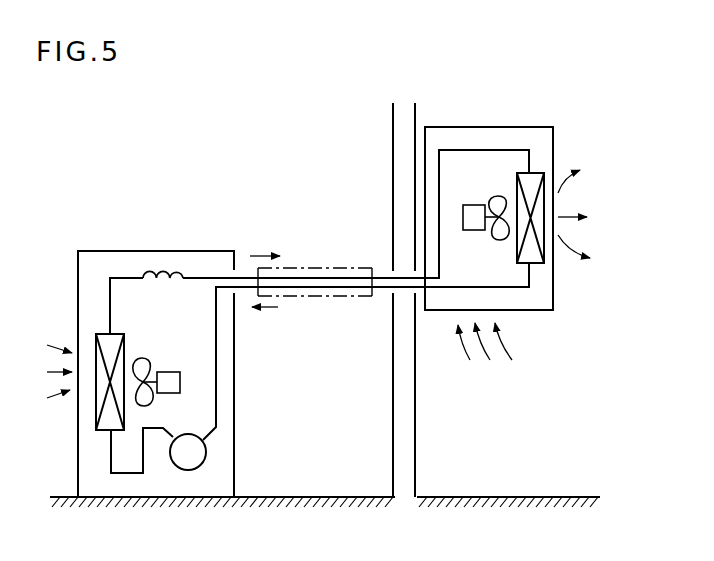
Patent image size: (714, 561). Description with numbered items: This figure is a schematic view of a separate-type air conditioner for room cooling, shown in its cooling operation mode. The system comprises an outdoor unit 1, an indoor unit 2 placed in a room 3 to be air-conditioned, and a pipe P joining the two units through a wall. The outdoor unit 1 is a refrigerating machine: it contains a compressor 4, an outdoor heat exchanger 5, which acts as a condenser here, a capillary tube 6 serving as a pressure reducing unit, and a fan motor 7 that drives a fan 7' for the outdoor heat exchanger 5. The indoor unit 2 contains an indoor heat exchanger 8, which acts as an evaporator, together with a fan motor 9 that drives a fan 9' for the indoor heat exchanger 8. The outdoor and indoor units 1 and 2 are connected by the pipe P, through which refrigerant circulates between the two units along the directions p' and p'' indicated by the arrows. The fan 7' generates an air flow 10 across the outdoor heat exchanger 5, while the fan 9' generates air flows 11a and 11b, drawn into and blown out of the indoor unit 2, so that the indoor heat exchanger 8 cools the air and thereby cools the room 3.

The outdoor unit 1 is at (158, 251).
The indoor unit 2 is at (505, 125).
The room 3 is at (459, 300).
The compressor 4 is at (184, 464).
The outdoor heat exchanger 5 is at (98, 431).
The capillary tube 6 is at (172, 283).
The fan motor 7 is at (181, 358).
The fan 7' is at (155, 363).
The indoor heat exchanger 8 is at (517, 173).
The fan motor 9 is at (466, 245).
The fan 9' is at (493, 241).
The air flow 10 is at (47, 398).
The air flow 11a is at (470, 360).
The air flow 11b is at (585, 215).
The pipe P is at (319, 311).
The direction of refrigerant flow P' is at (265, 234).
The direction of refrigerant flow P'' is at (276, 321).